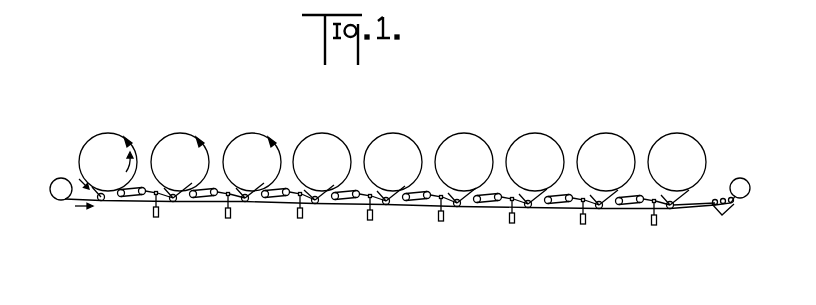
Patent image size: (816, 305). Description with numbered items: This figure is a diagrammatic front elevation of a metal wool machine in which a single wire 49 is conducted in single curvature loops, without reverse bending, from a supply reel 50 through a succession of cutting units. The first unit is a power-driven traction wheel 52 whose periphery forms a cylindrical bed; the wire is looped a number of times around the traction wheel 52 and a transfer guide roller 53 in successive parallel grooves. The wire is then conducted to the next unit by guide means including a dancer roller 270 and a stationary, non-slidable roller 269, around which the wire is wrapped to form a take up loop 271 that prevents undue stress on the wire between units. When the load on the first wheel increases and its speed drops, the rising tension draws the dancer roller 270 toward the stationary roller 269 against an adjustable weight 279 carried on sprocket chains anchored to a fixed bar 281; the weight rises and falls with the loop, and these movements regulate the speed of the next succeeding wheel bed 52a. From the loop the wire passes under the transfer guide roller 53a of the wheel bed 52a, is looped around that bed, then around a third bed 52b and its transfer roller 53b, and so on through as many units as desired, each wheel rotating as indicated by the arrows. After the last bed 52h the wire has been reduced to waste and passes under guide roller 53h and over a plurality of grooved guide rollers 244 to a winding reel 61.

The wire 49 is at (283, 205).
The supply reel 50 is at (58, 200).
The traction wheel 52 is at (96, 142).
The second wheel bed 52a is at (182, 143).
The third bed 52b is at (259, 140).
The last bed 52h is at (693, 132).
The transfer guide roller 53 is at (101, 201).
The transfer guide roller 53a is at (175, 200).
The transfer roller 53b is at (243, 201).
The guide roller 53h is at (670, 209).
The winding reel 61 is at (741, 178).
The guide rollers 244 is at (722, 216).
The stationary roller 269 is at (120, 197).
The dancer roller 270 is at (143, 195).
The take up loop 271 is at (103, 196).
The adjustable weight 279 is at (160, 216).
The fixed bar 281 is at (304, 190).